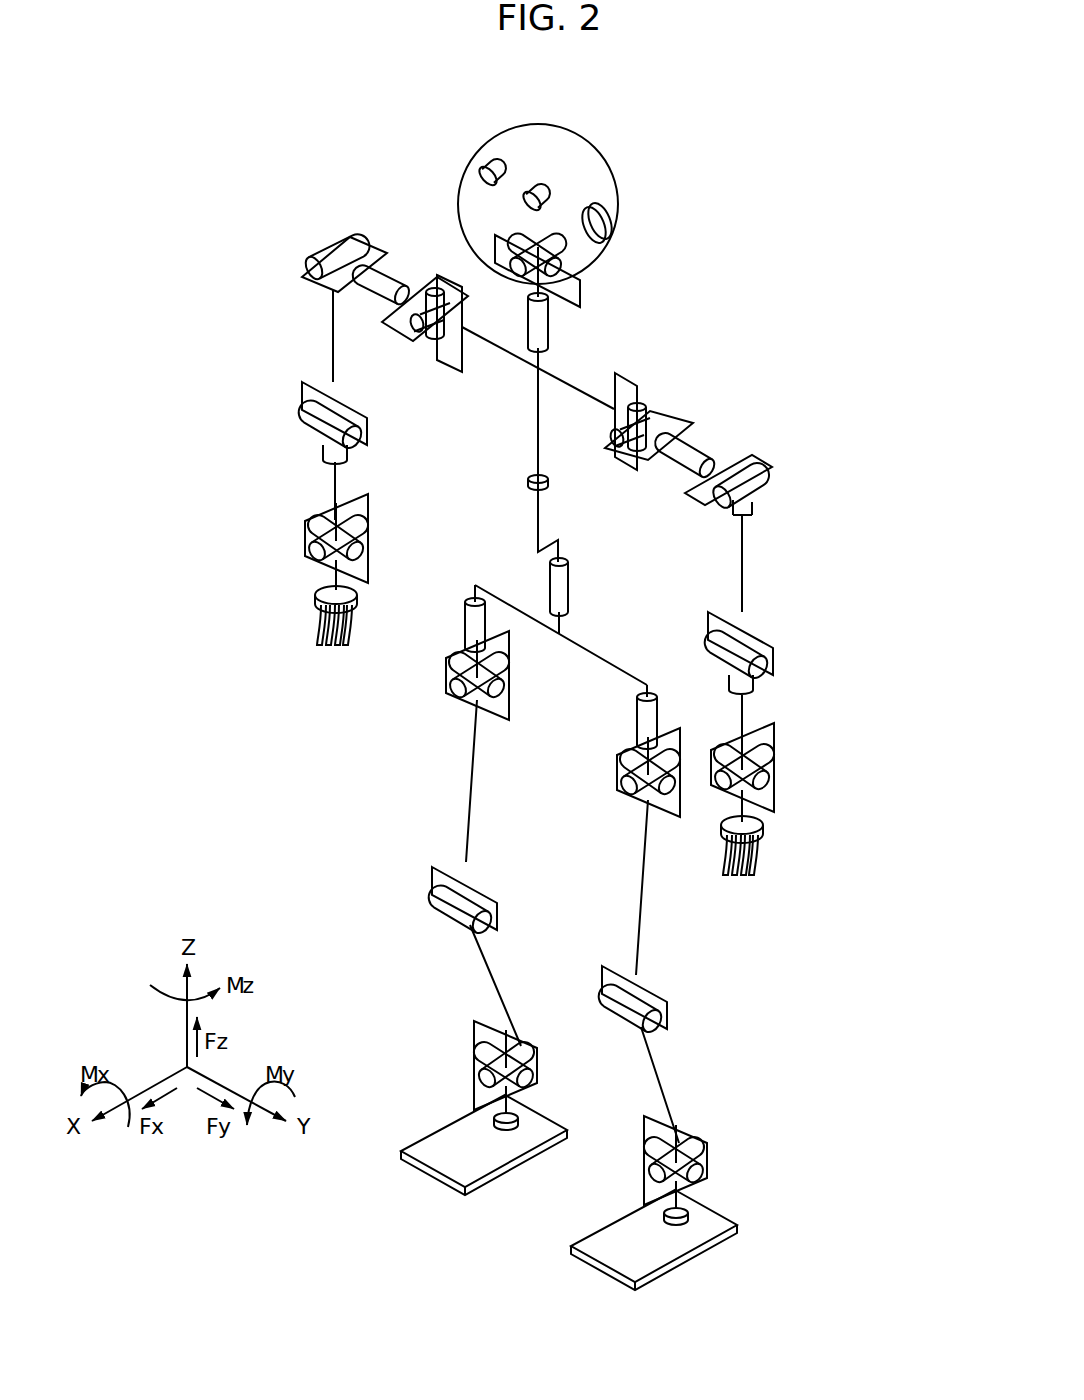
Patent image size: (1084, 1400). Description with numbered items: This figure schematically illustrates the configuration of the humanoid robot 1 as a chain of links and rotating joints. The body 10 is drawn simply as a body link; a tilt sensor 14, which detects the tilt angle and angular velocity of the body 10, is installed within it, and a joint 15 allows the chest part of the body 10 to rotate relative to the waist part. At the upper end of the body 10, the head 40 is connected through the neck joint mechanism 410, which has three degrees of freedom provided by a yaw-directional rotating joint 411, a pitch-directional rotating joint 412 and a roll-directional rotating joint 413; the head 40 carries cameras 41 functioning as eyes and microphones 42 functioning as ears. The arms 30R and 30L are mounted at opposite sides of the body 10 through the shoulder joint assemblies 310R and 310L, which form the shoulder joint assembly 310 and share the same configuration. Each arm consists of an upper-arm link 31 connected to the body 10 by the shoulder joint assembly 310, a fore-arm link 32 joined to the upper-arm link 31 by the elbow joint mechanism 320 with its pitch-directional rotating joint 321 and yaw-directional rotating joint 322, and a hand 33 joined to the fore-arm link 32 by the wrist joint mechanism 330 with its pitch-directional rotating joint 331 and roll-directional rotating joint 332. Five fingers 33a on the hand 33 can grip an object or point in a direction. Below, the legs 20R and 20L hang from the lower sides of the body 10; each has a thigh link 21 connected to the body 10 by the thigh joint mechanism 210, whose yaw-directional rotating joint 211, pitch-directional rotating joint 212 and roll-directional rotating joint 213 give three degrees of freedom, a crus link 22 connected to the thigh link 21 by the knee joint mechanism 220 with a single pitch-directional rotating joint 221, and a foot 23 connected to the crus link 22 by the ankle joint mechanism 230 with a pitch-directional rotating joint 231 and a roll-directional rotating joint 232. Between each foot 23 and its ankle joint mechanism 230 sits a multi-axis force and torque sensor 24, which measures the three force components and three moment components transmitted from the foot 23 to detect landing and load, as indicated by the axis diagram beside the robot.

The humanoid robot 1 is at (864, 148).
The body 10 is at (537, 450).
The tilt sensor 14 is at (548, 485).
The joint 15 is at (568, 585).
The right leg 20R is at (542, 956).
The left leg 20L is at (708, 935).
The thigh link 21 is at (470, 806).
The crus link 22 is at (485, 980).
The foot 23 is at (555, 1200).
The multi-axis force and torque sensor 24 is at (518, 1125).
The right arm 30R is at (498, 582).
The left arm 30L is at (836, 622).
The upper-arm link 31 is at (333, 323).
The fore-arm link 32 is at (334, 470).
The hand 33 is at (548, 717).
The fingers 33a is at (330, 636).
The head 40 is at (610, 150).
The cameras 41 is at (522, 207).
The microphones 42 is at (607, 219).
The thigh joint mechanism 210 is at (510, 741).
The yaw-directional rotating joint 211 is at (470, 630).
The pitch-directional rotating joint 212 is at (500, 686).
The roll-directional rotating joint 213 is at (458, 695).
The knee joint mechanism 220 is at (558, 941).
The pitch-directional rotating joint 221 is at (478, 900).
The ankle joint mechanism 230 is at (591, 1101).
The pitch-directional rotating joint 231 is at (535, 1082).
The roll-directional rotating joint 232 is at (518, 1045).
The shoulder joint assembly 310 is at (561, 330).
The right shoulder joint assembly 310R is at (328, 230).
The left shoulder joint assembly 310L is at (704, 406).
The elbow joint mechanism 320 is at (514, 519).
The pitch-directional rotating joint 321 is at (345, 404).
The yaw-directional rotating joint 322 is at (350, 448).
The wrist joint mechanism 330 is at (540, 653).
The pitch-directional rotating joint 331 is at (362, 550).
The roll-directional rotating joint 332 is at (355, 530).
The neck joint mechanism 410 is at (543, 302).
The yaw-directional rotating joint 411 is at (548, 325).
The pitch-directional rotating joint 412 is at (590, 268).
The roll-directional rotating joint 413 is at (497, 264).